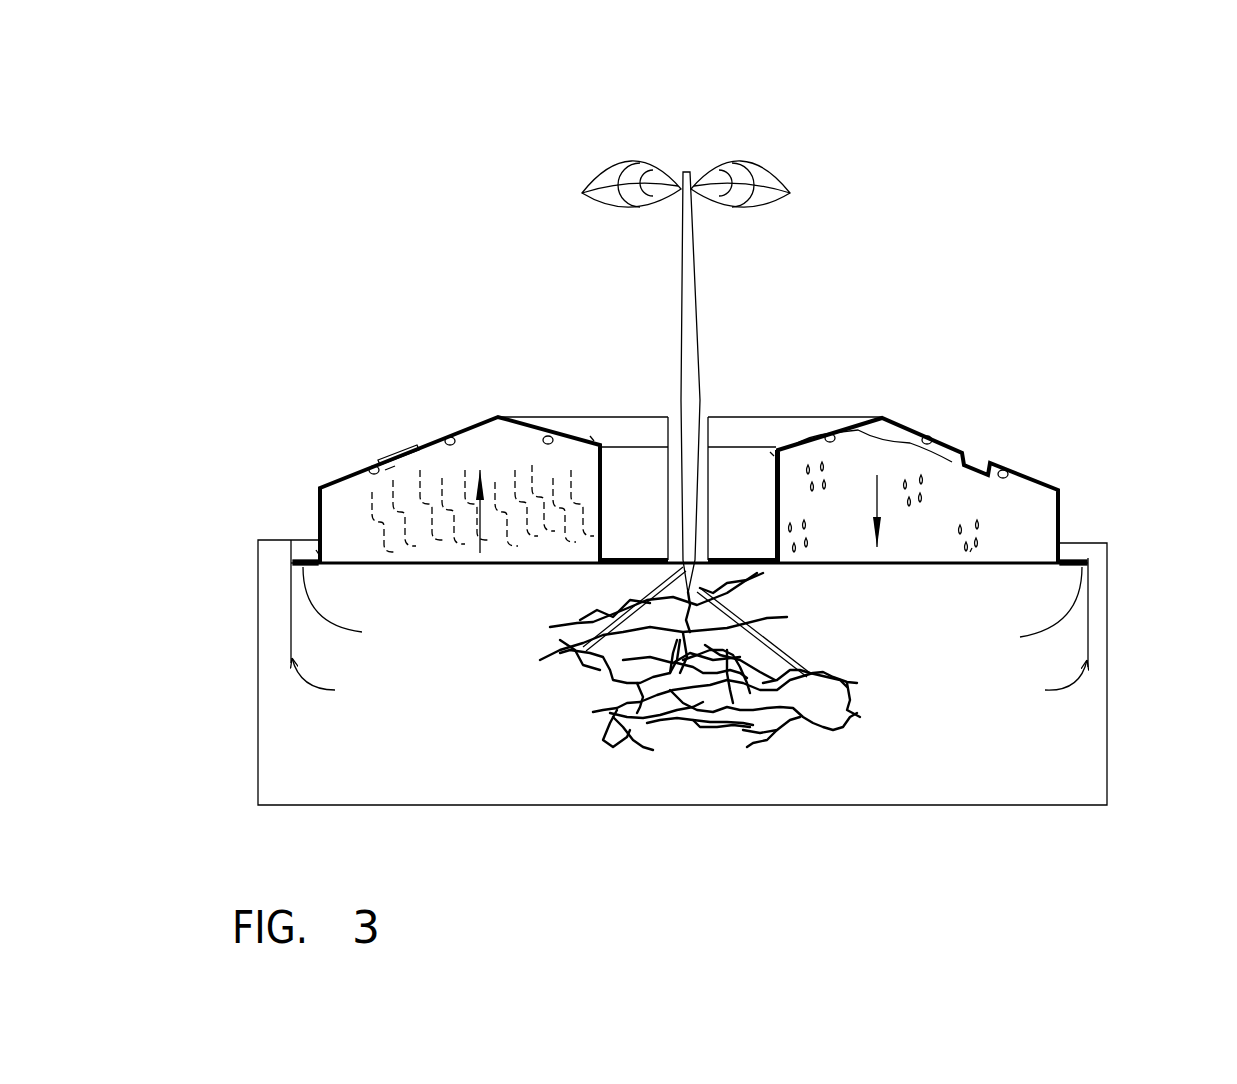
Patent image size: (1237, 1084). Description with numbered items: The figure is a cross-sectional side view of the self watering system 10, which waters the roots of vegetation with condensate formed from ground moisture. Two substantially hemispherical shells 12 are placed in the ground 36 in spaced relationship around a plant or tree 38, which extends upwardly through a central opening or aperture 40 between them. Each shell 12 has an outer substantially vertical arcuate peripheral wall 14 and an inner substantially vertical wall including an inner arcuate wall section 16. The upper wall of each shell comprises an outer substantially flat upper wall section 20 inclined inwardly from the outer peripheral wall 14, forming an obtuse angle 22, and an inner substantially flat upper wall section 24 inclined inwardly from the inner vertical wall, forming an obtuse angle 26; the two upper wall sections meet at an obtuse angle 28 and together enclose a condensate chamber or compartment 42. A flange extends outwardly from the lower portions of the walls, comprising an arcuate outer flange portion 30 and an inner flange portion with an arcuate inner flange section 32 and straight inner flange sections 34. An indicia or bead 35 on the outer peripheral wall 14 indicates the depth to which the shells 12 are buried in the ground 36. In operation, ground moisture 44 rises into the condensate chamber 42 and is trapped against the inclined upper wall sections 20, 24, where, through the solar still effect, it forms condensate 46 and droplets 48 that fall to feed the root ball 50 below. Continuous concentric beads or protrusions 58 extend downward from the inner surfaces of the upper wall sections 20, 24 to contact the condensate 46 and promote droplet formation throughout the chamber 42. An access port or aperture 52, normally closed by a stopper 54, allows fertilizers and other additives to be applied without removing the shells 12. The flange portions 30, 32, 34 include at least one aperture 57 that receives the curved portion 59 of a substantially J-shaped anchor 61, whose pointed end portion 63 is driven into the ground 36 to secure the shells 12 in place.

The self watering system 10 is at (902, 328).
The shell 12 is at (360, 405).
The outer substantially vertical semi-circular or arcuate peripheral wall 14 is at (318, 535).
The inner semi-circular or arcuate wall section 16 is at (645, 448).
The outer substantially flat upper wall section 20 is at (476, 425).
The obtuse angle 22 is at (319, 488).
The inner substantially flat upper wall section 24 is at (590, 417).
The obtuse angle 26 is at (633, 480).
The obtuse angle 28 is at (542, 415).
The substantially semi-circular or arcuate outer flange portion 30 is at (317, 558).
The substantially semi-circular or arcuate inner flange section 32 is at (625, 558).
The substantially straight inner flange section 34 is at (672, 552).
The indicia or bead or protrusion 35 is at (317, 537).
The ground 36 is at (1092, 767).
The plant or tree 38 is at (799, 172).
The central opening or aperture 40 is at (700, 352).
The condensate chamber or compartment 42 is at (904, 530).
The ground moisture 44 is at (510, 565).
The condensate 46 is at (957, 466).
The droplets 48 is at (975, 547).
The root ball 50 is at (627, 760).
The access port or aperture 52 is at (391, 468).
The stopper 54 is at (407, 443).
The aperture 57 is at (297, 568).
The continuous concentric beads or protrusions 58 is at (445, 438).
The curved portion 59 is at (692, 614).
The substantially J-shaped anchor 61 is at (291, 625).
The pointed end portion 63 is at (689, 684).